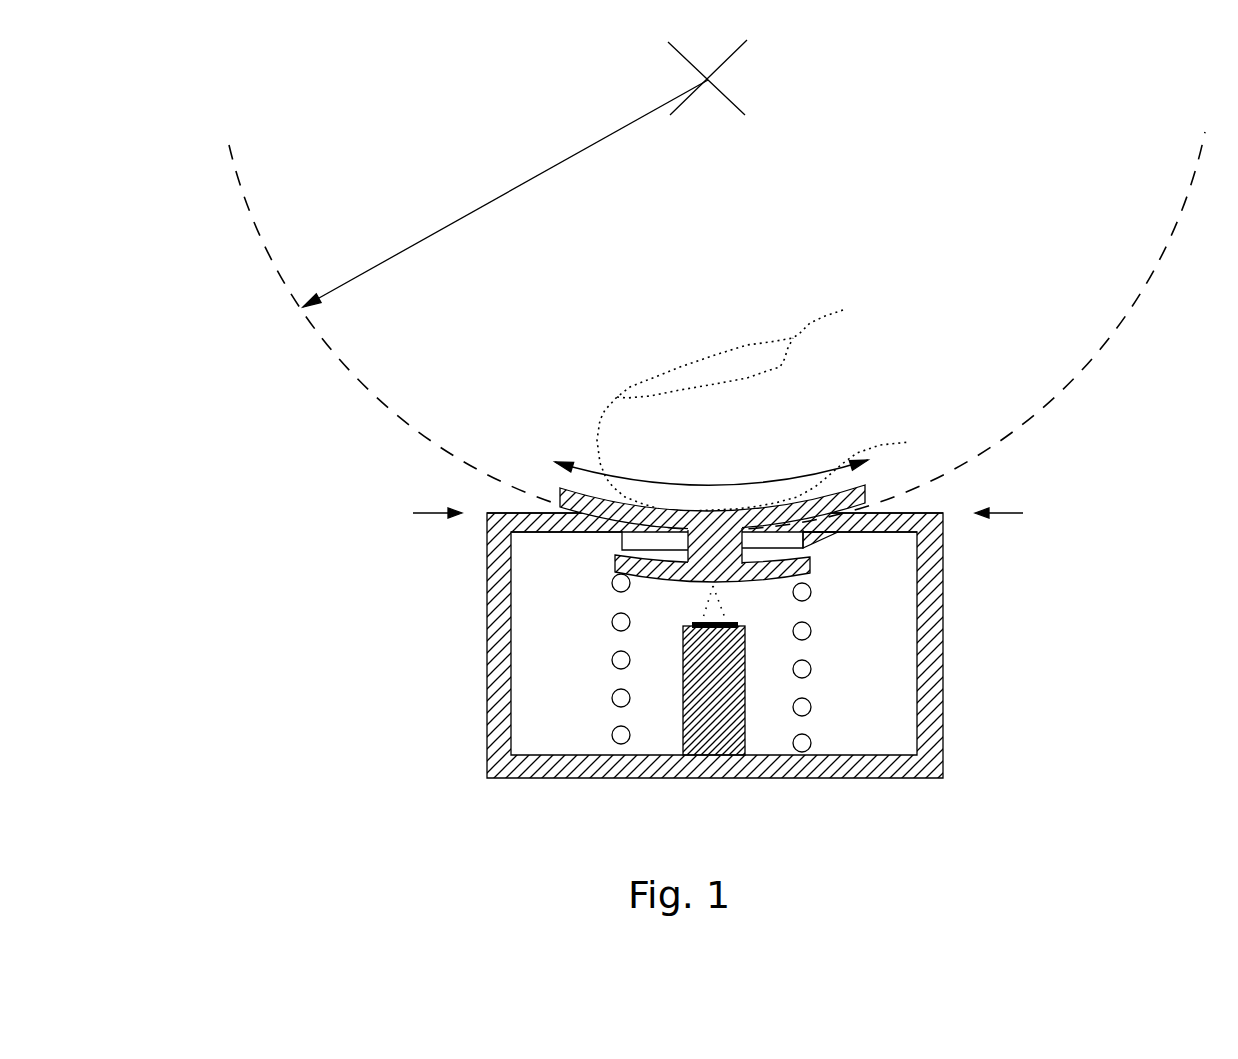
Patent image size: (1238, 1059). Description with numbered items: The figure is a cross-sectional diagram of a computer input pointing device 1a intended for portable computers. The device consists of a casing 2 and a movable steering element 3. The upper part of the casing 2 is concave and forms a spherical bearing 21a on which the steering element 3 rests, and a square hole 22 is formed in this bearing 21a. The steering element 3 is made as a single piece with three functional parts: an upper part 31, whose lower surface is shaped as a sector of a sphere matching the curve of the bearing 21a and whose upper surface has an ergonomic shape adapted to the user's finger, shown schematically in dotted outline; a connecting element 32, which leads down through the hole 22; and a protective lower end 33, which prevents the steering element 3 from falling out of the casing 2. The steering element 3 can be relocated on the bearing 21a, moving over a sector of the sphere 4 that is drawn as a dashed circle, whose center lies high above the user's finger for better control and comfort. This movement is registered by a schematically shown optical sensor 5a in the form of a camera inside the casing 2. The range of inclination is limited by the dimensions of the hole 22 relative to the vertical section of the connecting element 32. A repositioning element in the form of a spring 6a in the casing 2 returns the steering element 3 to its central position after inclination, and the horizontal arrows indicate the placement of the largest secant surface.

The computer input pointing device 1a is at (733, 584).
The casing 2 is at (850, 618).
The spherical bearing 21a is at (842, 520).
The square hole 22 is at (645, 543).
The steering element 3 is at (724, 533).
The upper part 31 is at (832, 506).
The connecting element 32 is at (713, 548).
The protective lower end 33 is at (778, 567).
The sector of the sphere 4 is at (507, 485).
The optical sensor 5a is at (715, 725).
The spring 6a is at (802, 669).